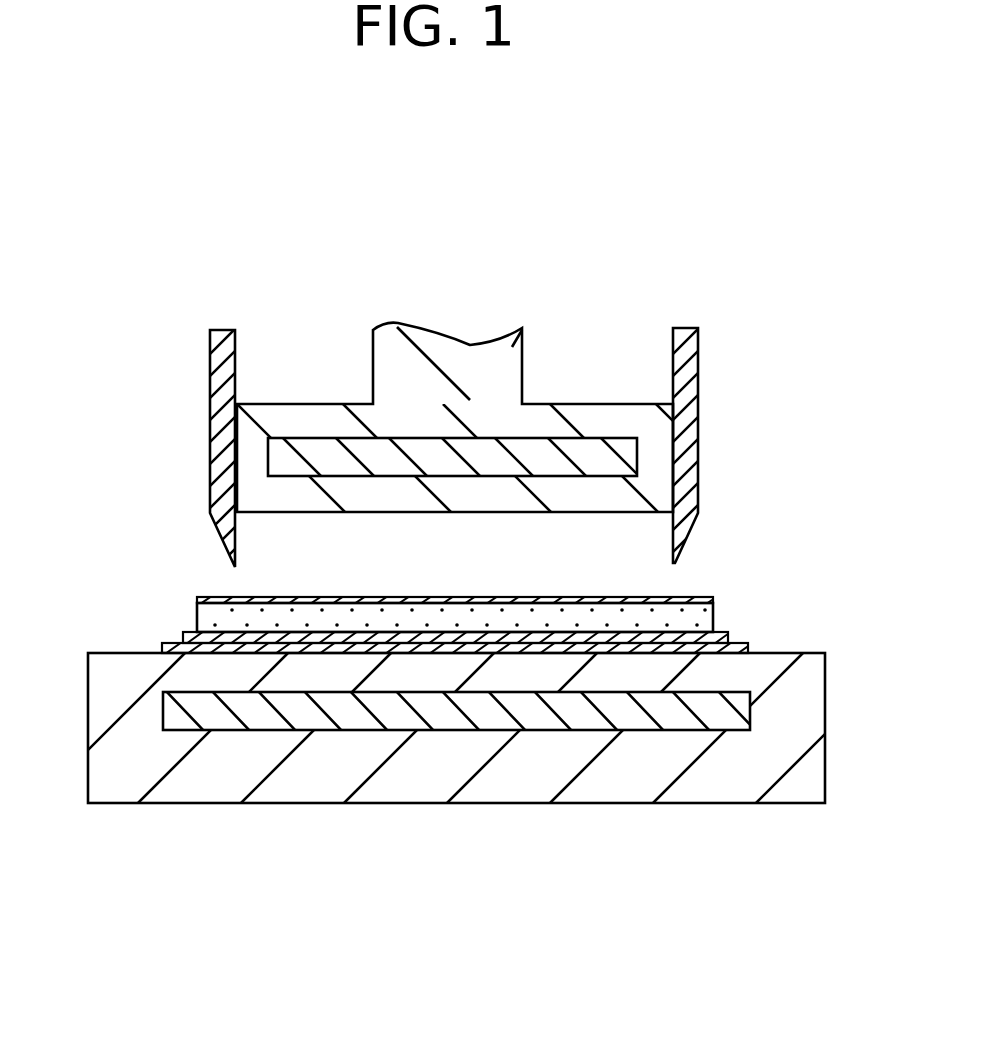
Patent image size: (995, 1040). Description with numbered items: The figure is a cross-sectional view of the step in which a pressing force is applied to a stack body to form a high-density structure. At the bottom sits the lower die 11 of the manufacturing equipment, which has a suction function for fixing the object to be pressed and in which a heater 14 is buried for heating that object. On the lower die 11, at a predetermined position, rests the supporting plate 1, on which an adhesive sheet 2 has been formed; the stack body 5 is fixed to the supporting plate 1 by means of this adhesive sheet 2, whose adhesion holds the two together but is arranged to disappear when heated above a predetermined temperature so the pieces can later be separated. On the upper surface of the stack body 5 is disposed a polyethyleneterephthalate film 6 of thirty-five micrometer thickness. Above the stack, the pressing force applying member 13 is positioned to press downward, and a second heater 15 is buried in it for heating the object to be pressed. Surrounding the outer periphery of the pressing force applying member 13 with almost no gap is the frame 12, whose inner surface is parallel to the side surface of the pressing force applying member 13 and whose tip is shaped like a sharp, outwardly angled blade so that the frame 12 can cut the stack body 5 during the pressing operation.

The supporting plate 1 is at (742, 645).
The adhesive sheet 2 is at (183, 636).
The stack body 5 is at (705, 623).
The polyethyleneterephthalate film 6 is at (667, 595).
The lower die 11 is at (493, 785).
The frame 12 is at (217, 367).
The pressing force applying member 13 is at (530, 408).
The heater 14 is at (260, 722).
The heater 15 is at (355, 445).